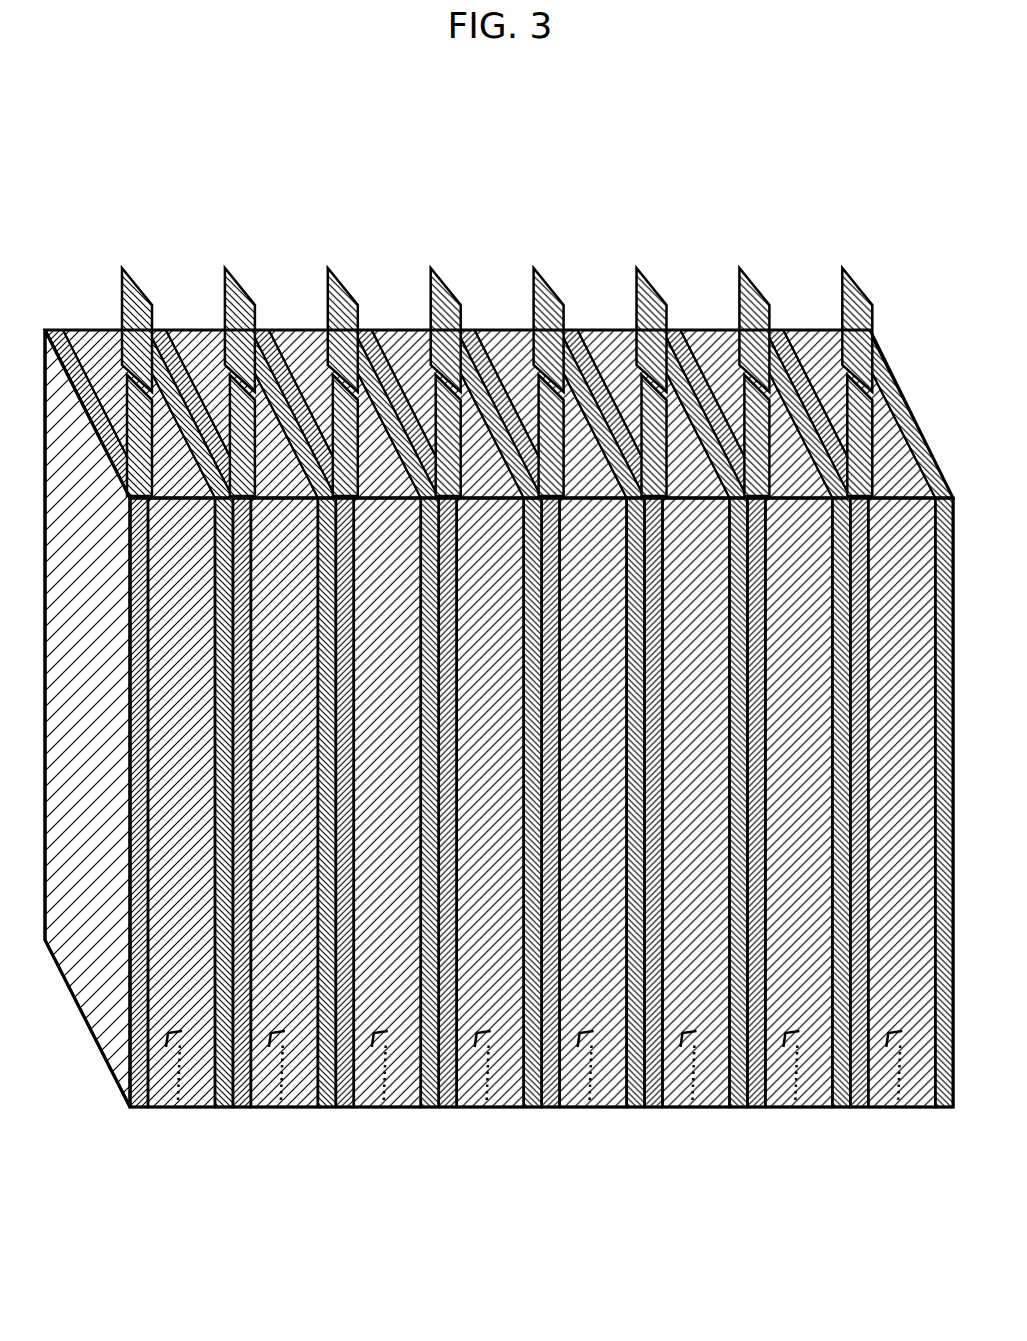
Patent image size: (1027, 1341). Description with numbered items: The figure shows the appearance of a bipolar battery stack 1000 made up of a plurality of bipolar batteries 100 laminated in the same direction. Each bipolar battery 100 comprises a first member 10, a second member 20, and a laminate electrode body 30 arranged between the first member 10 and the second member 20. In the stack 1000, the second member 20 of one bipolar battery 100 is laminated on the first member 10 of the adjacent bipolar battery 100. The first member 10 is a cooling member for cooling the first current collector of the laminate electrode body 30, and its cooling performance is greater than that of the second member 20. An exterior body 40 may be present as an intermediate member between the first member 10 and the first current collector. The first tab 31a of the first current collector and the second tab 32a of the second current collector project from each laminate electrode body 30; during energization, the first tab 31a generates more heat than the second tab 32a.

The bipolar battery stack 1000 is at (418, 93).
The bipolar battery 100 is at (499, 825).
The first member 10 is at (456, 787).
The second member 20 is at (541, 764).
The laminate electrode body 30 is at (541, 833).
The exterior body 40 is at (485, 369).
The first tab 31a is at (455, 342).
The second tab 32a is at (465, 249).